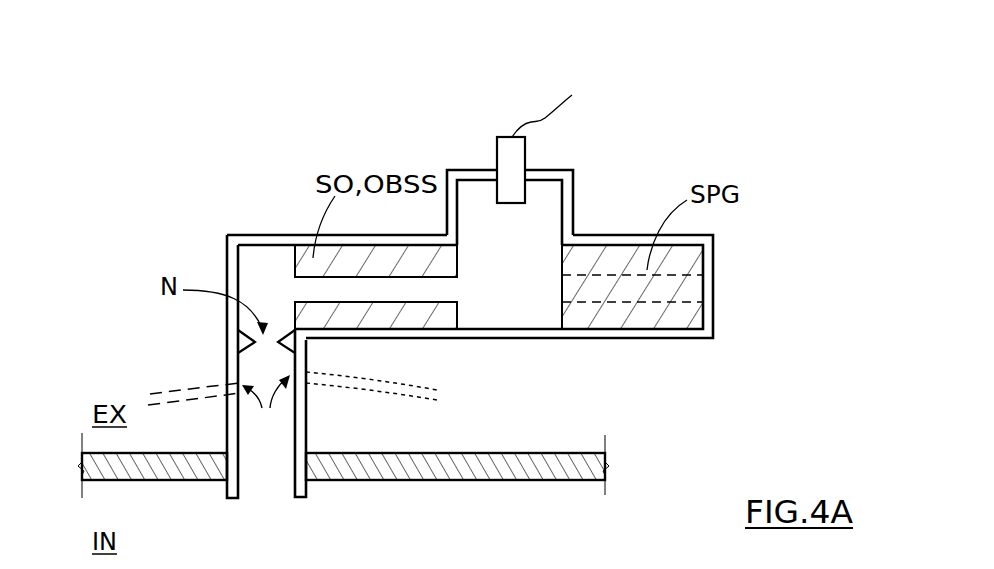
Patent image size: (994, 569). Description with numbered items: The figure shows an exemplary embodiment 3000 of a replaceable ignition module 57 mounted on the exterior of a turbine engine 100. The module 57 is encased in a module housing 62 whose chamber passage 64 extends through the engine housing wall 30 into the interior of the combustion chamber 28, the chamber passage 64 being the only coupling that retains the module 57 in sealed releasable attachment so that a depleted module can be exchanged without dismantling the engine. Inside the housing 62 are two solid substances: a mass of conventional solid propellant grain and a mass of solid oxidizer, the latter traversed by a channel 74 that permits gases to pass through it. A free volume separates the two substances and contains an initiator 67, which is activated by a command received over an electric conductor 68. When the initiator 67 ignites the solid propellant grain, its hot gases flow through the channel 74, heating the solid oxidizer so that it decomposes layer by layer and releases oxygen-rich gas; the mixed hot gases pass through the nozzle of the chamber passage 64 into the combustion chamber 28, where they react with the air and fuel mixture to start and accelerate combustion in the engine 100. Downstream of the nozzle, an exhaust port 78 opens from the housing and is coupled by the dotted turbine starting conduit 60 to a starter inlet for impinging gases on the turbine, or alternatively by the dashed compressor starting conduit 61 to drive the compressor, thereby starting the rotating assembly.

The combustion chamber 28 is at (288, 554).
The engine housing wall 30 is at (517, 468).
The replaceable ignition module 57 is at (157, 165).
The turbine starting conduit 60 is at (400, 392).
The compressor starting conduit 61 is at (170, 393).
The module housing 62 is at (705, 311).
The chamber passage 64 is at (270, 472).
The initiator 67 is at (510, 155).
The electric conductor 68 is at (538, 121).
The channel 74 is at (308, 289).
The exhaust port 78 is at (266, 407).
The turbine engine 100 is at (572, 455).
The exemplary embodiment 3000 is at (684, 144).